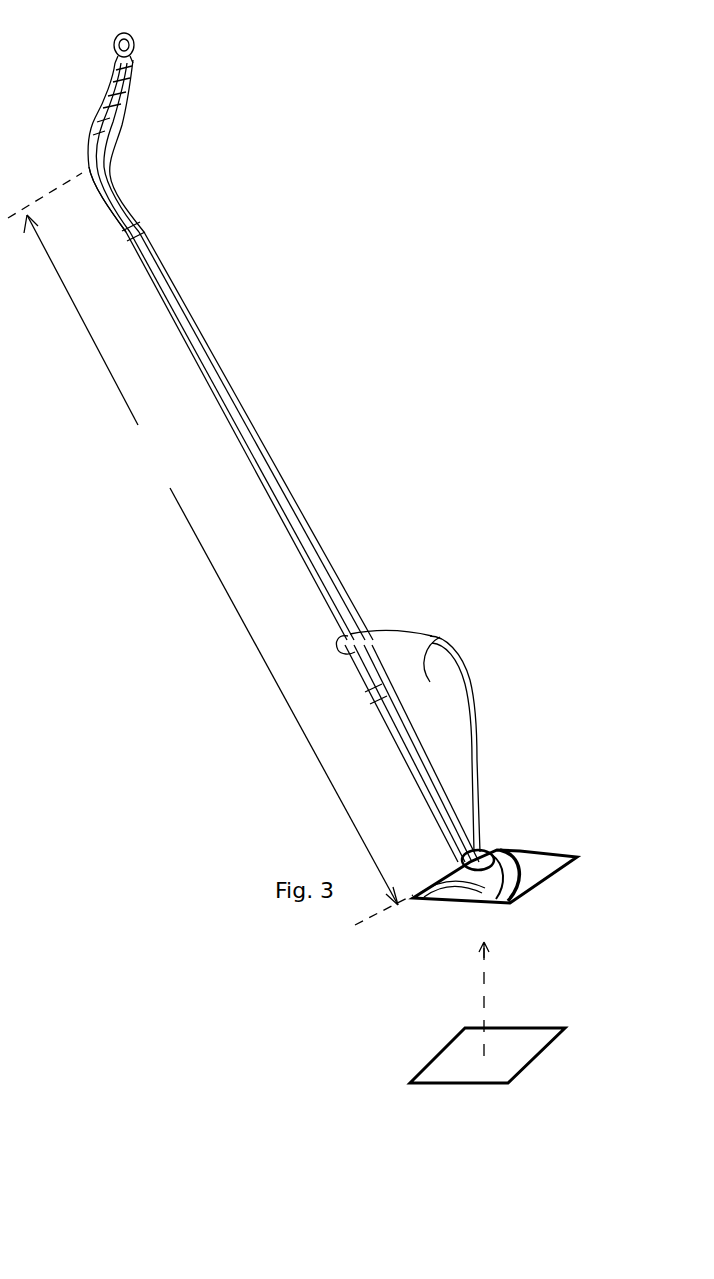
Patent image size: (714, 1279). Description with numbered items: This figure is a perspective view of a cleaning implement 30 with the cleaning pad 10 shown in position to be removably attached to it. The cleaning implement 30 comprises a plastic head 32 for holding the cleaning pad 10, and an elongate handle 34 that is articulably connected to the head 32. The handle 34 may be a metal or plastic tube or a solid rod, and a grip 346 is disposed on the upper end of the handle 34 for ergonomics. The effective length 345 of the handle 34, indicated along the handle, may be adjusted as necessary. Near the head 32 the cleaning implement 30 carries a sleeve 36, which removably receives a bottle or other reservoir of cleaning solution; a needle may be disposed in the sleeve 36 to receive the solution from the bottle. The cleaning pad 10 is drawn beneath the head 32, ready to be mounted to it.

The cleaning pad 10 is at (447, 1068).
The cleaning implement 30 is at (571, 396).
The plastic head 32 is at (512, 838).
The elongate handle 34 is at (107, 90).
The effective length 345 is at (210, 549).
The grip 346 is at (116, 150).
The sleeve 36 is at (432, 636).